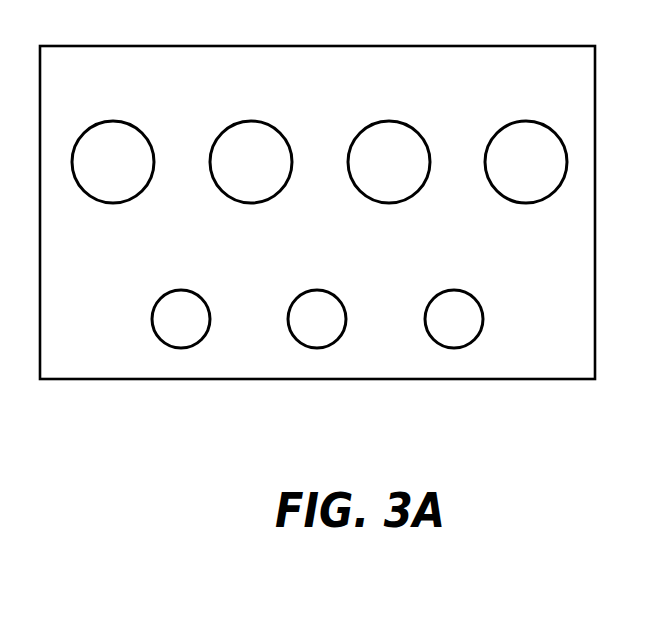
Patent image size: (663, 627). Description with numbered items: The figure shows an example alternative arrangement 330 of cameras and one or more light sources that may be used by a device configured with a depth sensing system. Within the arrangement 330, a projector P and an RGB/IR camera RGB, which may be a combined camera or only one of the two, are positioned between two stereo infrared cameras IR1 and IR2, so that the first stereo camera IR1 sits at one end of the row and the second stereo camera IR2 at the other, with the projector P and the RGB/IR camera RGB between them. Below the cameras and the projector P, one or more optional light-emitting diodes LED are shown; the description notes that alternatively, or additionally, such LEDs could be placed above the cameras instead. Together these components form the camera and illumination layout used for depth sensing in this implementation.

The sensor array 330 is at (160, 86).
The stereo IR camera IR1 is at (96, 172).
The projector P is at (243, 172).
The RGB/IR camera RGB is at (357, 158).
The stereo IR camera IR2 is at (508, 172).
The element LED is at (317, 319).